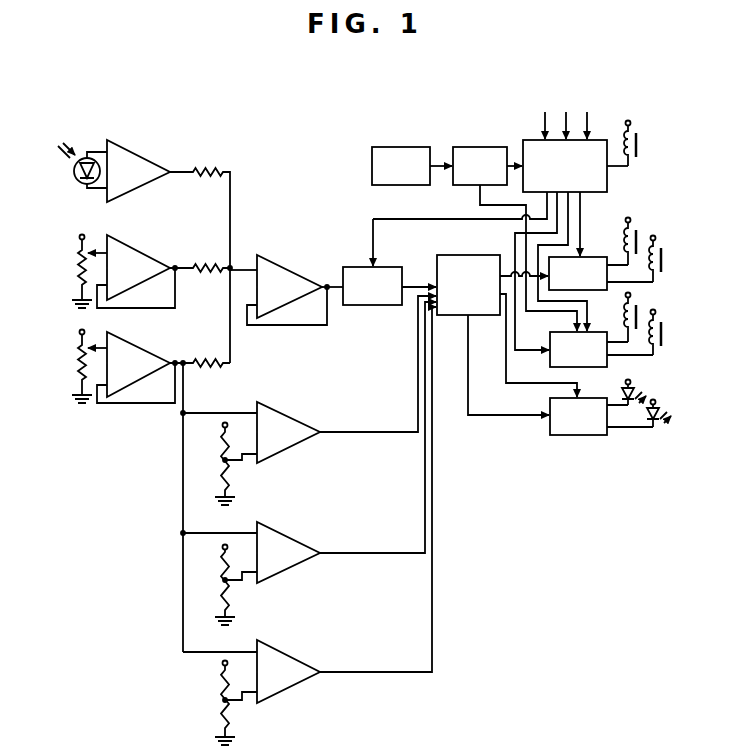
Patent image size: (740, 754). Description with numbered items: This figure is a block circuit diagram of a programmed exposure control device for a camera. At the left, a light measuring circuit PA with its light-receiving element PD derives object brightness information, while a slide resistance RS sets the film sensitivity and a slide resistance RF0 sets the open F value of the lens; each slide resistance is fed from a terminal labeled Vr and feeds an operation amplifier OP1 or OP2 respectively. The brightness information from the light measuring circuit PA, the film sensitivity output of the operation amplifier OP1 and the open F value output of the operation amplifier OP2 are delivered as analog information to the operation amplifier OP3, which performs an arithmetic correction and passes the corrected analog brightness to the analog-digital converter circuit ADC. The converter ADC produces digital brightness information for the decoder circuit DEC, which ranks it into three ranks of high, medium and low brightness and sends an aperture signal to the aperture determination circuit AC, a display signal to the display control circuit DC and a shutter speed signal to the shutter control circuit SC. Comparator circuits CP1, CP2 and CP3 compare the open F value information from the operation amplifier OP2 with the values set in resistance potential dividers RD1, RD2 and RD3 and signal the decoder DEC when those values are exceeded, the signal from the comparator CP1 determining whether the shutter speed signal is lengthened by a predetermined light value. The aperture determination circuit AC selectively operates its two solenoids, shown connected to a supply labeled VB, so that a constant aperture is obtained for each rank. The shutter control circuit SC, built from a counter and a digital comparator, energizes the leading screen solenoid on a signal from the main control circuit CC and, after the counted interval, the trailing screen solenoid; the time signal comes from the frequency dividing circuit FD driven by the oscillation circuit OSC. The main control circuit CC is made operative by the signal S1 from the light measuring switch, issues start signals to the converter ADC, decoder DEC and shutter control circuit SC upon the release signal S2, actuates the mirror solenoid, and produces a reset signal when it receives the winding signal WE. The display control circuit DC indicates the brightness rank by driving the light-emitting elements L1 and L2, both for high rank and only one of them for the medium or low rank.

The light-receiving element PD is at (72, 172).
The light measuring circuit PA is at (168, 251).
The operation amplifier OP1 is at (160, 271).
The operation amplifier OP2 is at (159, 367).
The operation amplifier OP3 is at (286, 290).
The slide resistance RS is at (70, 274).
The slide resistance RF0 is at (67, 369).
The reference voltage Vr is at (156, 443).
The analog-digital converter circuit ADC is at (389, 262).
The decoder circuit DEC is at (507, 335).
The comparator circuit CP1 is at (330, 379).
The comparator circuit CP2 is at (330, 442).
The comparator circuit CP3 is at (330, 505).
The resistance potential divider RD1 is at (210, 466).
The resistance potential divider RD2 is at (210, 587).
The resistance potential divider RD3 is at (210, 705).
The oscillation circuit OSC is at (412, 166).
The frequency dividing circuit FD is at (515, 239).
The main control circuit CC is at (500, 245).
The signal S1 is at (547, 116).
The signal S2 is at (568, 116).
The signal WE is at (592, 116).
The supply voltage VB is at (635, 160).
The aperture determination circuit AC is at (601, 273).
The shutter control circuit SC is at (601, 349).
The display control circuit DC is at (601, 416).
The light-emitting element L1 is at (639, 388).
The light-emitting element L2 is at (665, 410).